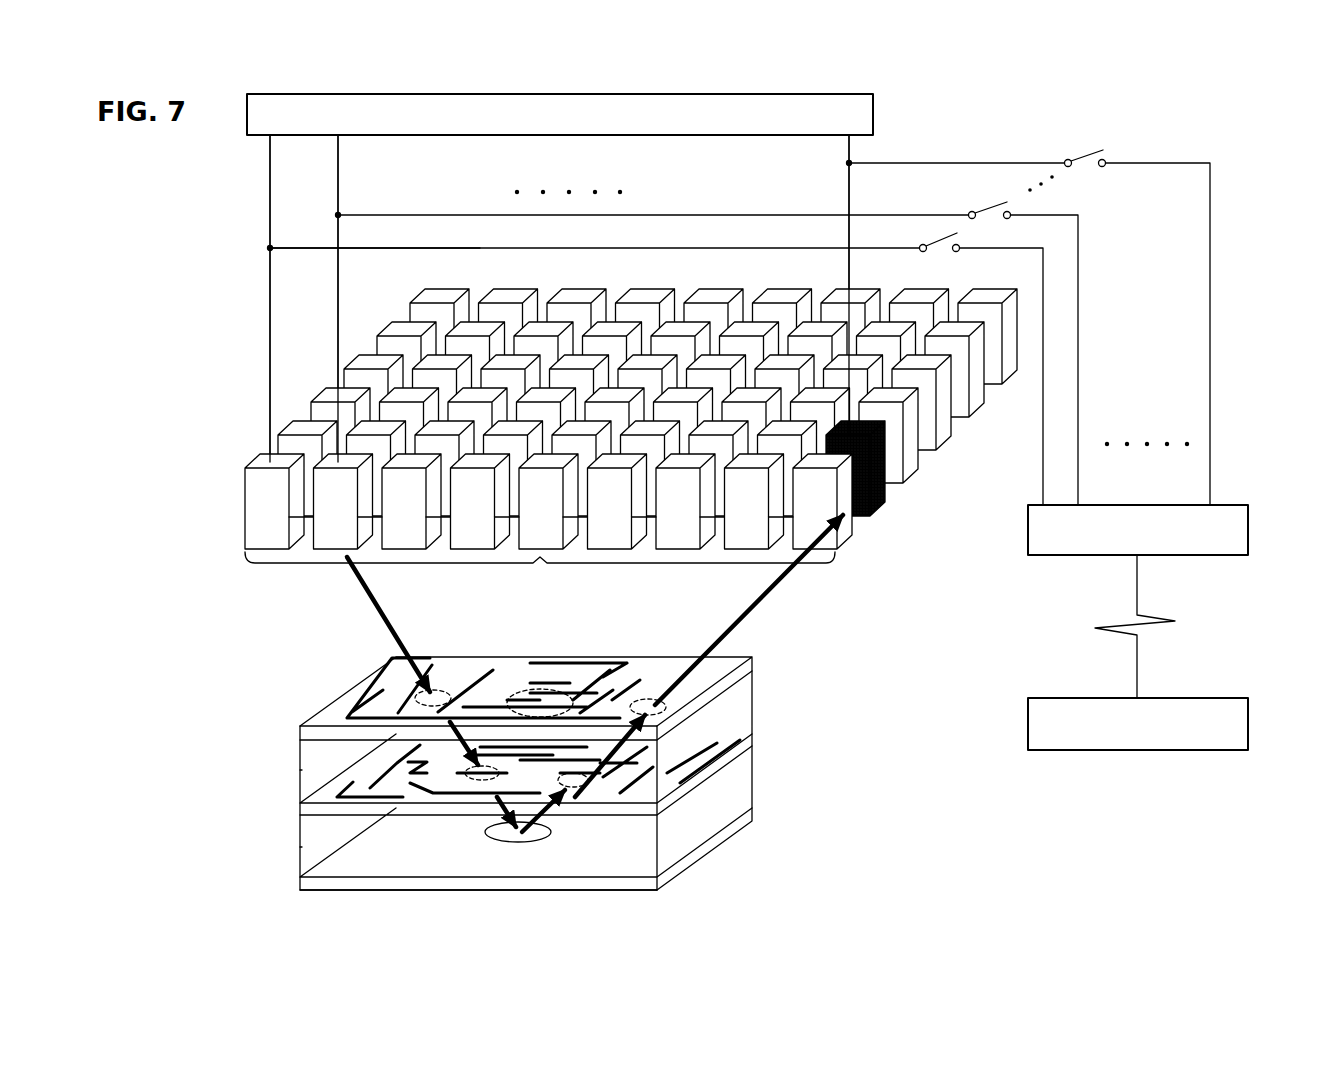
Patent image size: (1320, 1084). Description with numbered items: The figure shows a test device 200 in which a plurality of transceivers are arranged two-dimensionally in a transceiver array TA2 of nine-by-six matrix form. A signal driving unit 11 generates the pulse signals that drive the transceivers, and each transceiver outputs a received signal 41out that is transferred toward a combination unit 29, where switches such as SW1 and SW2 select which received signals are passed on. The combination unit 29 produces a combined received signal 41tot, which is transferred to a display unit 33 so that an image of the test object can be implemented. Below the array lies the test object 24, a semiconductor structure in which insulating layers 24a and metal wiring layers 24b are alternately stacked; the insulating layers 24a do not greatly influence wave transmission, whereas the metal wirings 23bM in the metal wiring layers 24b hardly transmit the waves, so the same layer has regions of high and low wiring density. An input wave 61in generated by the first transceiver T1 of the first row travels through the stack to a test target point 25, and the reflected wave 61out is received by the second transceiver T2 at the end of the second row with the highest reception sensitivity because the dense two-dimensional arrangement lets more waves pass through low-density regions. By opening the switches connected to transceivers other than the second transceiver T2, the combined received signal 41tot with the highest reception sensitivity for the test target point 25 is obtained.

The signal driving unit 11 is at (873, 112).
The test device 200 is at (597, 343).
The received signal 41out is at (487, 250).
The switch SW1 is at (708, 353).
The switch SW2 is at (1029, 327).
The first transceiver T1 is at (343, 501).
The second transceiver T2 is at (855, 468).
The transceiver array TA2 is at (540, 572).
The combination unit 29 is at (1230, 505).
The combined received signal 41tot is at (1175, 621).
The display unit 33 is at (1230, 698).
The input wave 61in is at (368, 603).
The reflected wave 61out is at (762, 600).
The metal wiring 23bM is at (483, 660).
The test object 24 is at (473, 743).
The insulating layer 24a is at (298, 847).
The metal wiring layer 24b is at (298, 885).
The test target point 25 is at (548, 840).